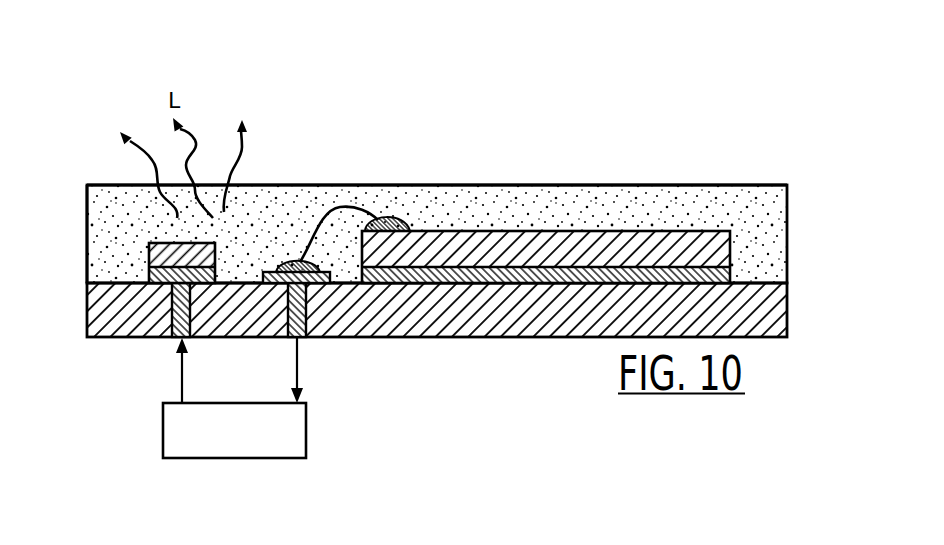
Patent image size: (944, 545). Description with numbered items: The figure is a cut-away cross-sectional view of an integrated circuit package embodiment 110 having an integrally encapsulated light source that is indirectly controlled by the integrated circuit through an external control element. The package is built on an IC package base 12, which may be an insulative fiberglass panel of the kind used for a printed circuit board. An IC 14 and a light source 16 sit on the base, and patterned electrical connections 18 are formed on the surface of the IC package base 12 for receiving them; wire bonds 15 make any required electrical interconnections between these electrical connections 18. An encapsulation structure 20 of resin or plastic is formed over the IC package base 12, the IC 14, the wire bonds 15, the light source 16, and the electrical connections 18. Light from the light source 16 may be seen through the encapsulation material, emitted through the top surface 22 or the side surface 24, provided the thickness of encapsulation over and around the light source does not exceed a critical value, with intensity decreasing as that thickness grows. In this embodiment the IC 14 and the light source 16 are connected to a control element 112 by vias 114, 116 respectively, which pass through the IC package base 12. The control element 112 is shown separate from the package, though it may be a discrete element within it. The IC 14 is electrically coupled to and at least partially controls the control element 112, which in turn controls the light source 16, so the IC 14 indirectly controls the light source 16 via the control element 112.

The integrated circuit package embodiment 110 is at (122, 73).
The IC package base 12 is at (788, 305).
The IC 14 is at (788, 257).
The wire bonds 15 is at (347, 206).
The light source 16 is at (148, 256).
The electrical connections 18 is at (417, 283).
The encapsulation structure 20 is at (788, 210).
The top surface 22 is at (700, 185).
The side surface 24 is at (87, 258).
The control element 112 is at (163, 430).
The via 114 is at (305, 303).
The via 116 is at (172, 309).